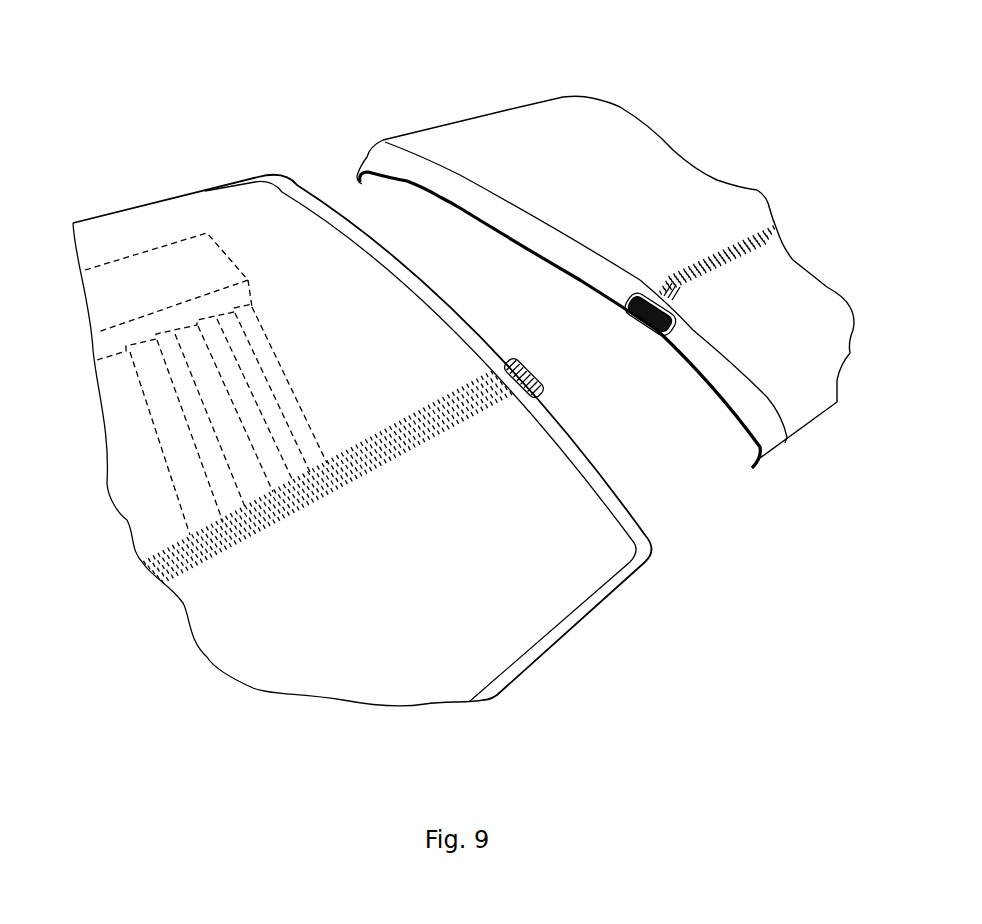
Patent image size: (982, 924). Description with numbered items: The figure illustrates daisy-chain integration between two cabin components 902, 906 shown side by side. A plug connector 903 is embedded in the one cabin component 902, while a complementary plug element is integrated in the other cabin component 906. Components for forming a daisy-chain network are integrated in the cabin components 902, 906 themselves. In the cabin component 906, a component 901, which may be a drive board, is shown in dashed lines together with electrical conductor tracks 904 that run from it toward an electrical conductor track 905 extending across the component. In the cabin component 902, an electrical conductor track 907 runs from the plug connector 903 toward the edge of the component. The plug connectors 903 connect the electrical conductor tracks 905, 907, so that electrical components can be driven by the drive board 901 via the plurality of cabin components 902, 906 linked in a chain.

The component 901 is at (123, 267).
The cabin component 902 is at (507, 133).
The plug connector 903 is at (641, 333).
The electrical conductor track 904 is at (265, 382).
The electrical conductor track 905 is at (407, 443).
The cabin component 906 is at (220, 203).
The electrical conductor track 907 is at (763, 223).